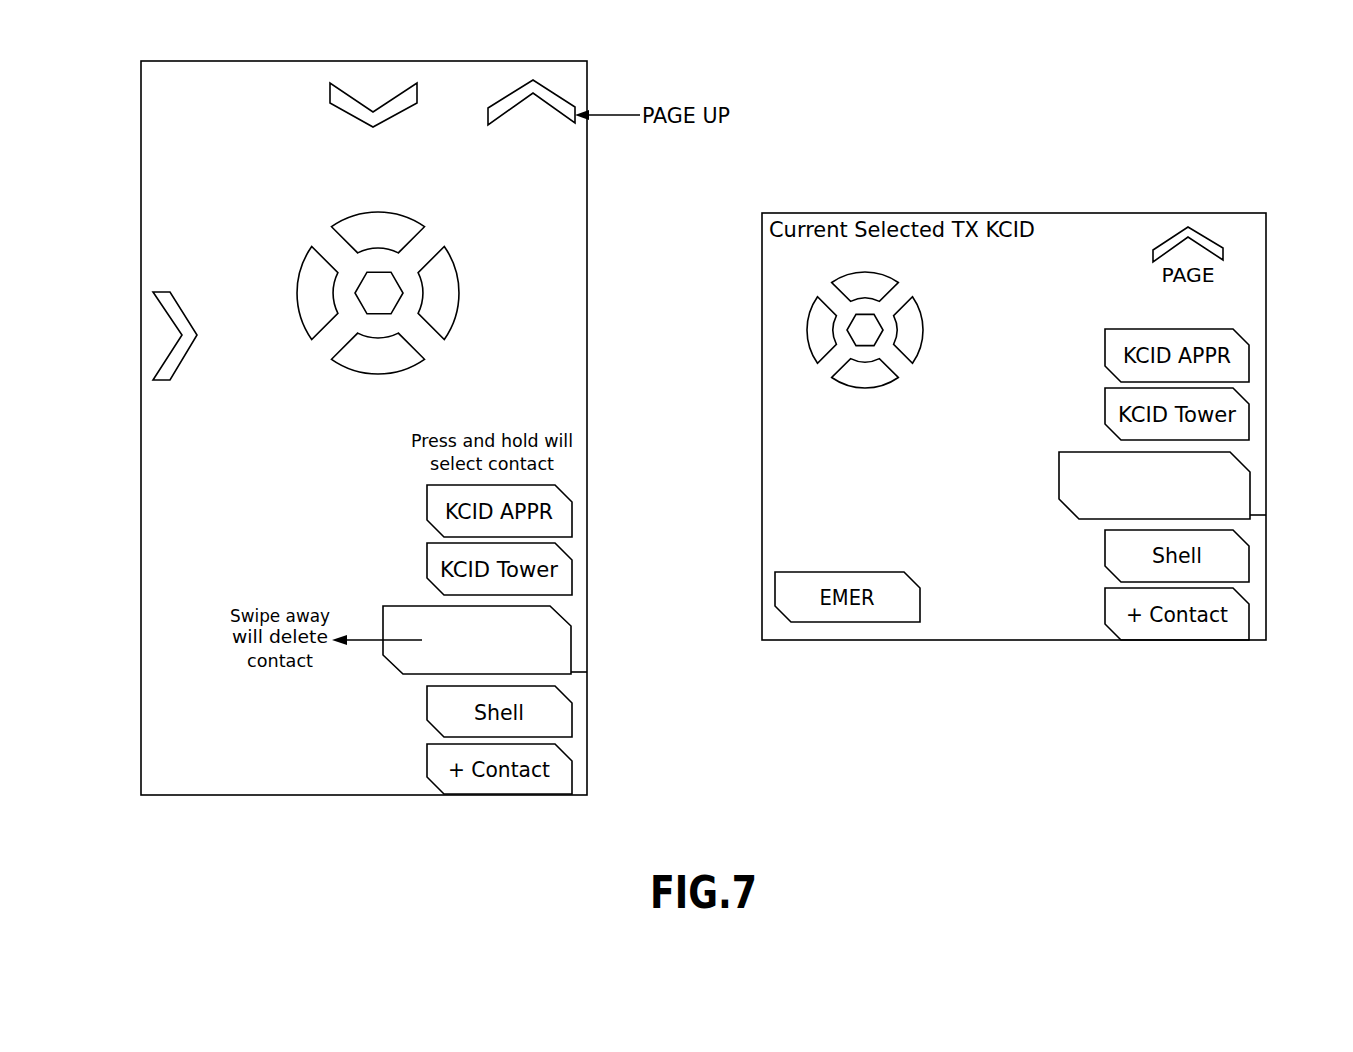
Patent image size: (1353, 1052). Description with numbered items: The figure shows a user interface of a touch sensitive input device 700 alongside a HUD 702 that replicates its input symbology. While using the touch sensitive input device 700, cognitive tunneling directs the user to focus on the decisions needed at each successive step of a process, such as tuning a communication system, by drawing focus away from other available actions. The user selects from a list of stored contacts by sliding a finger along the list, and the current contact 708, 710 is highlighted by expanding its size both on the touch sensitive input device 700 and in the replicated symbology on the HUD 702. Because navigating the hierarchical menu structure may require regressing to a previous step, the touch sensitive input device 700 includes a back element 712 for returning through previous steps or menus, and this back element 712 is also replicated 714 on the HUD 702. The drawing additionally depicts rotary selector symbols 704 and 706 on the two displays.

The touch sensitive input device 700 is at (173, 113).
The HUD 702 is at (1065, 230).
The rotary selector knob 704 is at (396, 285).
The rotary selector knob 706 is at (863, 333).
The current contact 708 is at (552, 623).
The current contact 710 is at (1240, 467).
The back element 712 is at (548, 87).
The replicated back element 714 is at (1207, 235).